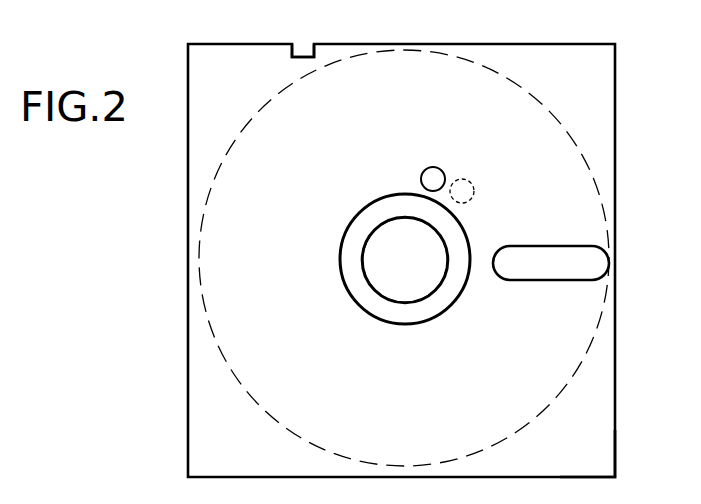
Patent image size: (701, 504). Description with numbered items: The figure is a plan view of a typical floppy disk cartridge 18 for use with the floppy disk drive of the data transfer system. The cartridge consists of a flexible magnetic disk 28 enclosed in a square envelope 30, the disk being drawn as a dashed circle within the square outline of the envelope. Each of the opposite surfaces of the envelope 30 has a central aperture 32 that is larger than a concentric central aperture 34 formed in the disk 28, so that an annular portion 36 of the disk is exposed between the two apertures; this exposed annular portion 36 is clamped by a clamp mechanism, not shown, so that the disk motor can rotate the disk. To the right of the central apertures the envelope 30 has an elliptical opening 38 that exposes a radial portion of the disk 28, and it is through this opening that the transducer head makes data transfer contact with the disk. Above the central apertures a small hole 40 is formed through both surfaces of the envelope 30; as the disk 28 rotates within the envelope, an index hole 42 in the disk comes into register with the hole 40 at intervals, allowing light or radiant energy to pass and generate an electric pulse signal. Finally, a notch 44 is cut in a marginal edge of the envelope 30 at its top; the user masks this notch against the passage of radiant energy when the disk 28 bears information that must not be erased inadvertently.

The floppy disk cartridge 18 is at (618, 122).
The flexible magnetic disk 28 is at (578, 370).
The square envelope 30 is at (616, 436).
The central aperture 32 is at (393, 318).
The central aperture 34 is at (437, 280).
The annular portion 36 is at (350, 271).
The elliptical opening 38 is at (527, 245).
The small hole 40 is at (433, 170).
The index hole 42 is at (466, 185).
The notch 44 is at (302, 43).